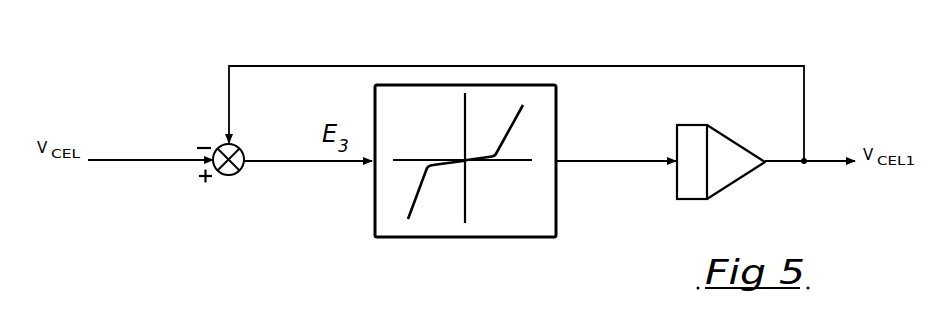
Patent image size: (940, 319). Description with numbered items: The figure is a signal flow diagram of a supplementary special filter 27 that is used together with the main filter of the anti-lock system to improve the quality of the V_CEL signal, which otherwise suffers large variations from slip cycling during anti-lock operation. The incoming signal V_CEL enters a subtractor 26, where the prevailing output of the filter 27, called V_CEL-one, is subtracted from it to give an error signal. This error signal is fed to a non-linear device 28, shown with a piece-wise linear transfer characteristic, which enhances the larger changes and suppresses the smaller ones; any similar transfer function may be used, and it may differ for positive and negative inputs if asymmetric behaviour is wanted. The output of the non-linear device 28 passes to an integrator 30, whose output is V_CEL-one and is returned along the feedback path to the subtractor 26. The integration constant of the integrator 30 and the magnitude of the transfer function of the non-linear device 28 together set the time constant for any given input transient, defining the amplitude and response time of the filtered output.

The subtractor 26 is at (243, 151).
The special filter 27 is at (468, 61).
The non-linear device 28 is at (557, 216).
The integrator 30 is at (738, 174).